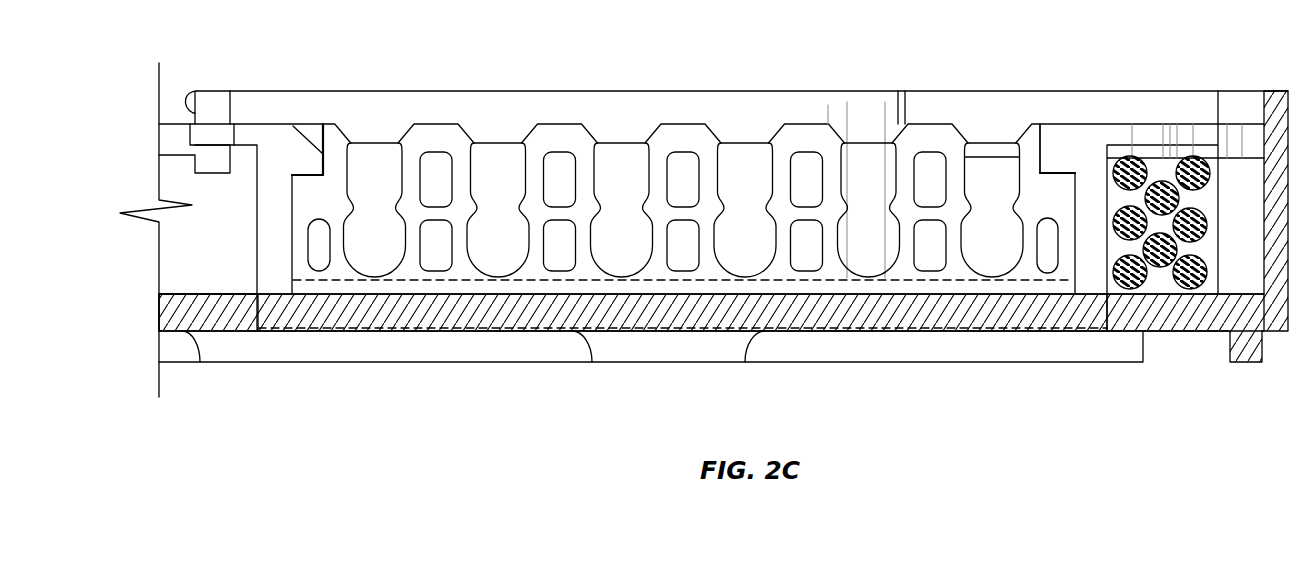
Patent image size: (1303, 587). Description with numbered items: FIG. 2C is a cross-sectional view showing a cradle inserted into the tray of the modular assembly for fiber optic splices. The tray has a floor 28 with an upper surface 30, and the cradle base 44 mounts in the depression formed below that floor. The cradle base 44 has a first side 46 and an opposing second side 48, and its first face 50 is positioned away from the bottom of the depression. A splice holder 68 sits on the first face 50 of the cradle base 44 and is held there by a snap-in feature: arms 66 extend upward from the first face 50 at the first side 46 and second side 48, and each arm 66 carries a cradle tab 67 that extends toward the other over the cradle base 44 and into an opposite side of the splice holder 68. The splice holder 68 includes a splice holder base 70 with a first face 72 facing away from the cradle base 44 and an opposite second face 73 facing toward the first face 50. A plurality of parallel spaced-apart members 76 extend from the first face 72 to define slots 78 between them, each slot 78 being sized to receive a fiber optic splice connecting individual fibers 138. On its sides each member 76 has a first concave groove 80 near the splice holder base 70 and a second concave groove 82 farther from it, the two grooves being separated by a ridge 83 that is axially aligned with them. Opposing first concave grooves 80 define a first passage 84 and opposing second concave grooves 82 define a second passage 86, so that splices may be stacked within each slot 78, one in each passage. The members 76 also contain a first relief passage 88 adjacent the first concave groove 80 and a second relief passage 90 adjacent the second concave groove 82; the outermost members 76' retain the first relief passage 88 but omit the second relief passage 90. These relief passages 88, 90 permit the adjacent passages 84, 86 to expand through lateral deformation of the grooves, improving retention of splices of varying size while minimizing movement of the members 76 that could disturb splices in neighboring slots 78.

The floor 28 is at (177, 315).
The upper surface 30 is at (187, 293).
The cradle base 44 is at (500, 318).
The first side 46 is at (1120, 308).
The second side 48 is at (243, 303).
The first face 50 is at (842, 298).
The arm 66 is at (275, 247).
The cradle tab 67 is at (305, 155).
The splice holder 68 is at (310, 114).
The splice holder base 70 is at (440, 287).
The first face 72 is at (655, 277).
The second face 73 is at (707, 292).
The member 76 is at (820, 150).
The outermost member 76' is at (683, 163).
The slot 78 is at (627, 145).
The first concave groove 80 is at (404, 240).
The second concave groove 82 is at (401, 177).
The ridge 83 is at (395, 207).
The first passage 84 is at (559, 240).
The second passage 86 is at (559, 176).
The first relief passage 88 is at (1097, 390).
The second relief passage 90 is at (498, 178).
The individual fibers 138 is at (1165, 183).